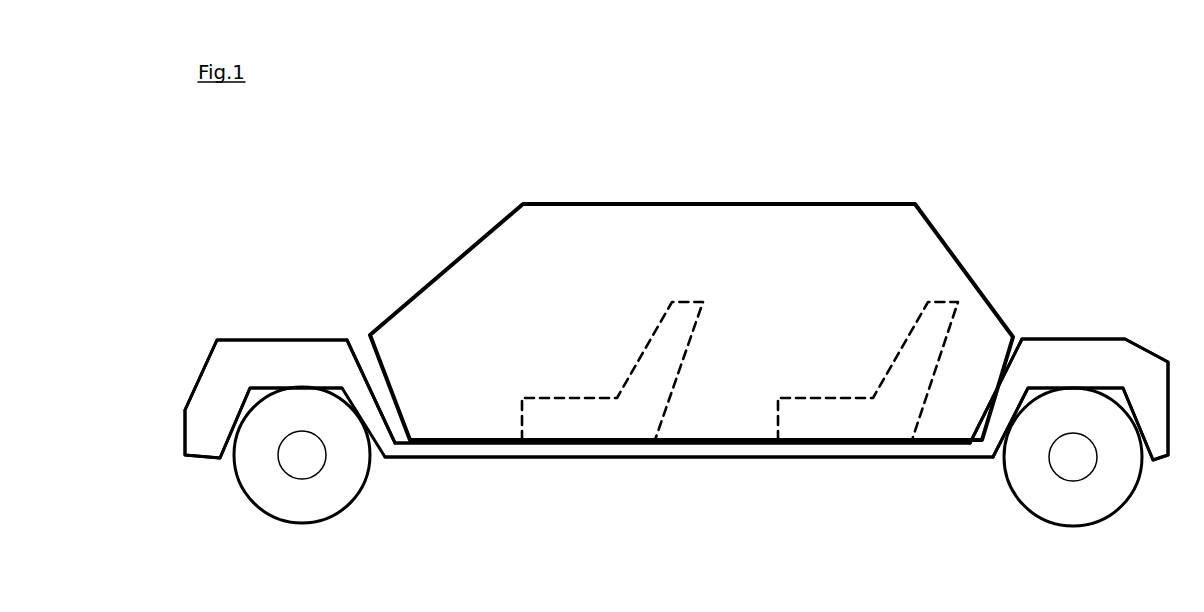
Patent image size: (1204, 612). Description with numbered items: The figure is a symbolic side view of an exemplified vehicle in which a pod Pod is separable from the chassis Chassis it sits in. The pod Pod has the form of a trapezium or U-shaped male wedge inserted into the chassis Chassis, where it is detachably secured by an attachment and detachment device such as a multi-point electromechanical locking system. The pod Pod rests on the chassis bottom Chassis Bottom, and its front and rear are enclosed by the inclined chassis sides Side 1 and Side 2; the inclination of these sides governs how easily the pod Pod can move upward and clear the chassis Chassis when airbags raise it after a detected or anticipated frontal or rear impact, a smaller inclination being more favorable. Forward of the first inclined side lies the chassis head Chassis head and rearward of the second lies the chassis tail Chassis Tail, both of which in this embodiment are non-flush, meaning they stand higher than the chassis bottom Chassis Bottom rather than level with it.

The pod Pod is at (430, 278).
The chassis Chassis is at (337, 337).
The chassis head Chassis head is at (210, 387).
The chassis tail Chassis Tail is at (1057, 358).
The chassis bottom Chassis Bottom is at (807, 455).
The side 1 of the chassis Side 1 is at (367, 378).
The side 2 of the chassis Side 2 is at (1000, 387).